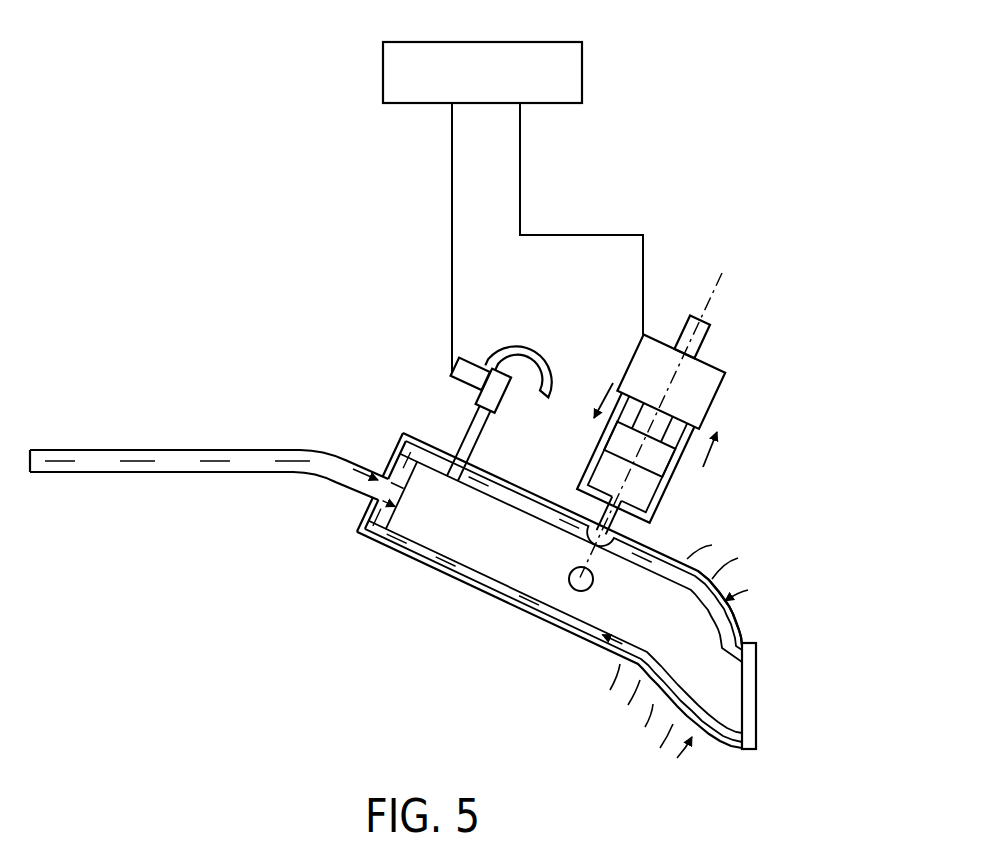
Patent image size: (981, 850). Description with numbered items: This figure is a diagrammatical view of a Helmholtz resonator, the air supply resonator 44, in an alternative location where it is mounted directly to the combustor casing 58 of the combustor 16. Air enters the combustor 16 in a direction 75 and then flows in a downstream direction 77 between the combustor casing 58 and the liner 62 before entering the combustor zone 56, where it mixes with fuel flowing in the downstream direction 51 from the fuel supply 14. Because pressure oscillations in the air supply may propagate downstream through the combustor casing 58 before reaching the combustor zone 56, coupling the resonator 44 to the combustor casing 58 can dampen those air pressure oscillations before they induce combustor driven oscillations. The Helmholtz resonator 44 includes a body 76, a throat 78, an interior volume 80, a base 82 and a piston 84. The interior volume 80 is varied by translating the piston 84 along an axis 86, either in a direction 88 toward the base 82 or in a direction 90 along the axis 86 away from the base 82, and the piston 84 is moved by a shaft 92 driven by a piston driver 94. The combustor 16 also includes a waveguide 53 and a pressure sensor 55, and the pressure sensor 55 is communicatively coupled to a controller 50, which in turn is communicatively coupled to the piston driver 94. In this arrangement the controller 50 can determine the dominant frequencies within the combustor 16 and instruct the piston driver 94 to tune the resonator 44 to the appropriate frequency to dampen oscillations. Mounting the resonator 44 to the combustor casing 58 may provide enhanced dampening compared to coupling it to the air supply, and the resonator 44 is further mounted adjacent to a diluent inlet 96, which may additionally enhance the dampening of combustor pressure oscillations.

The controller 50 is at (583, 73).
The fuel supply 14 is at (76, 448).
The downstream direction 51 is at (130, 458).
The combustor 16 is at (433, 517).
The combustor zone 56 is at (492, 562).
The downstream direction 77 is at (498, 468).
The waveguide 53 is at (470, 428).
The pressure sensor 55 is at (452, 373).
The air supply resonator 44 is at (575, 427).
The axis 86 is at (708, 302).
The shaft 92 is at (707, 334).
The piston driver 94 is at (693, 377).
The piston 84 is at (632, 404).
The direction 88 is at (607, 392).
The body 76 is at (670, 504).
The base 82 is at (645, 530).
The interior volume 80 is at (650, 481).
The direction 90 is at (707, 456).
The throat 78 is at (590, 500).
The diluent inlet 96 is at (568, 593).
The direction 75 is at (736, 572).
The combustor casing 58 is at (733, 624).
The liner 62 is at (707, 714).